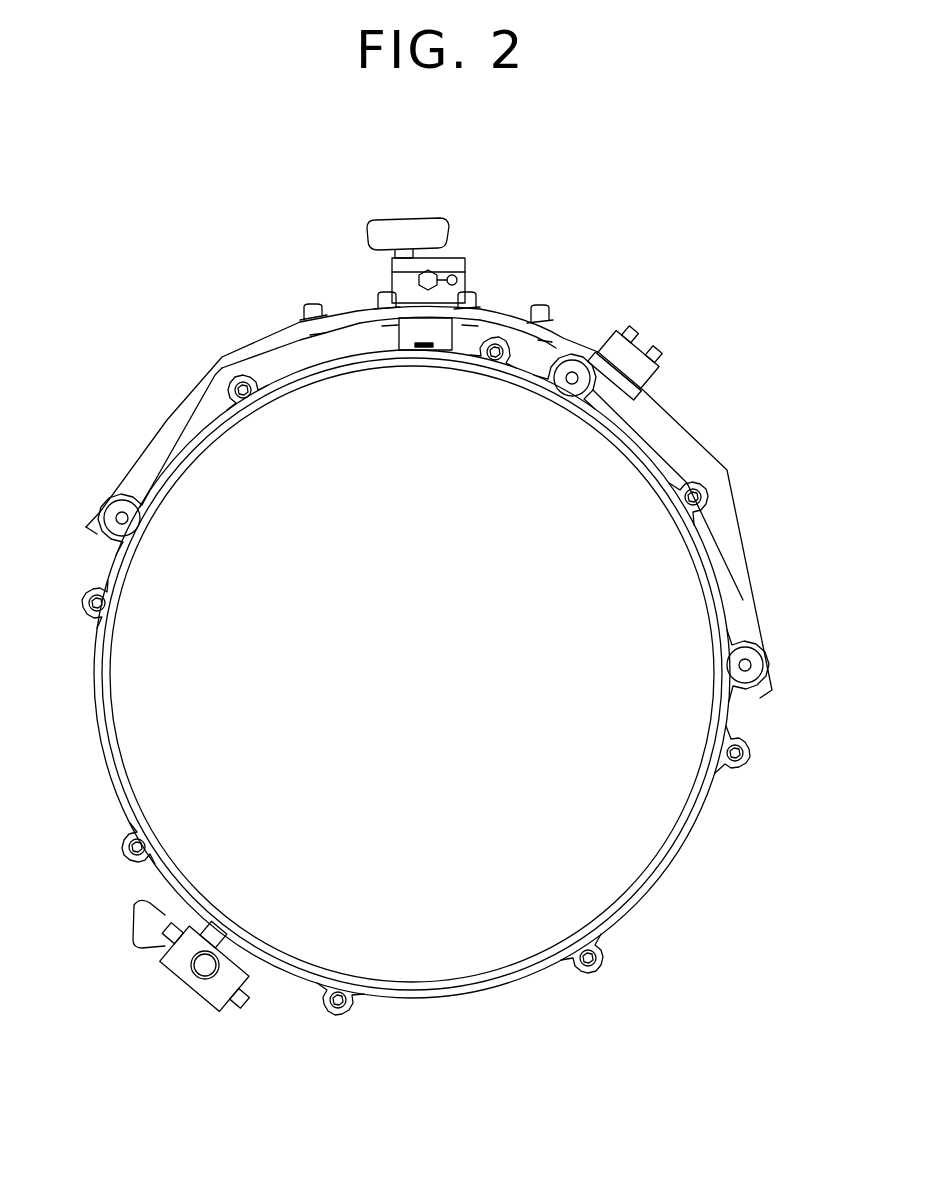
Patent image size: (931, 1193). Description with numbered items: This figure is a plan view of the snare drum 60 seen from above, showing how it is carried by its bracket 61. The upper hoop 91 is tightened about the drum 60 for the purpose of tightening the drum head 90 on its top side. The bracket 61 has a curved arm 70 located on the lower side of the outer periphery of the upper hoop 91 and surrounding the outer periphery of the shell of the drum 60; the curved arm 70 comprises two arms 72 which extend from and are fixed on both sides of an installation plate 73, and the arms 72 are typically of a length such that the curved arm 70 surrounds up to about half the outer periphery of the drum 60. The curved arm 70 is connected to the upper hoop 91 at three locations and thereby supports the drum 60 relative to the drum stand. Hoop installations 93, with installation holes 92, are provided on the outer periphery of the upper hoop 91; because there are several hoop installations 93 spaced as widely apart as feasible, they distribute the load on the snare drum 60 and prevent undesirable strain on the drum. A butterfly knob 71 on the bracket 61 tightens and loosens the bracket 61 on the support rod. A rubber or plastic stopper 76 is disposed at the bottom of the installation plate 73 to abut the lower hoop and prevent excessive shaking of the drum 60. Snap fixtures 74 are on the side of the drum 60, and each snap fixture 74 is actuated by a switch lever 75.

The snare drum 60 is at (702, 818).
The bracket 61 is at (462, 262).
The curved arm 70 is at (436, 466).
The butterfly knob 71 is at (370, 232).
The arms 72 is at (227, 352).
The installation plate 73 is at (507, 313).
The snap fixture 74 is at (657, 357).
The switch lever 75 is at (135, 923).
The stopper 76 is at (412, 332).
The drum head 90 is at (622, 653).
The upper hoop 91 is at (95, 648).
The installation holes 92 is at (127, 522).
The hoop installations 93 is at (140, 508).